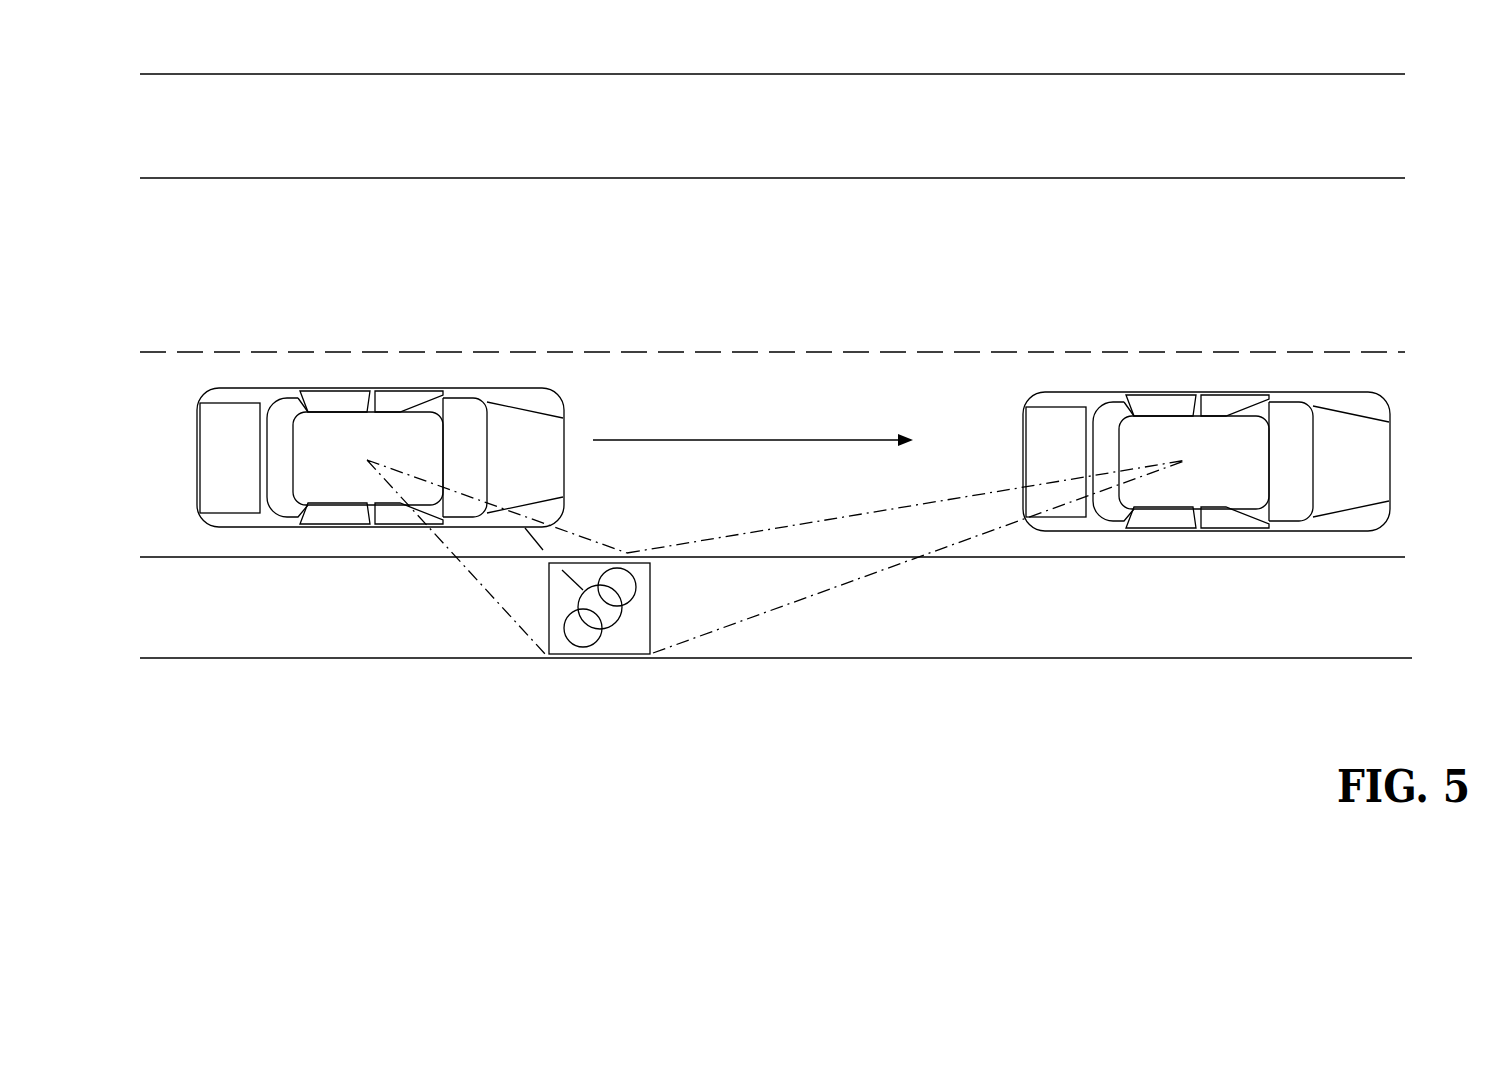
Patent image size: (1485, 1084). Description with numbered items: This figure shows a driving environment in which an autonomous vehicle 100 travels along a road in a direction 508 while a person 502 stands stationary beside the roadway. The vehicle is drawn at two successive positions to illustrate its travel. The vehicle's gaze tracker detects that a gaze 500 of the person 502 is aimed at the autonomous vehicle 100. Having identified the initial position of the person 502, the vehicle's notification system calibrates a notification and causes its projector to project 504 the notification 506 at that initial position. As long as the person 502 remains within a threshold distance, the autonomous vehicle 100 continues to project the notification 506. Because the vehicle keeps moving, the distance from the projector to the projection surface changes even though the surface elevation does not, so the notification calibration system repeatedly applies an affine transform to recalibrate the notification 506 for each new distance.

The autonomous vehicle 100 is at (172, 484).
The gaze 500 is at (546, 550).
The person 502 is at (613, 648).
The projection 504 is at (788, 508).
The notification 506 is at (567, 656).
The direction 508 is at (750, 440).